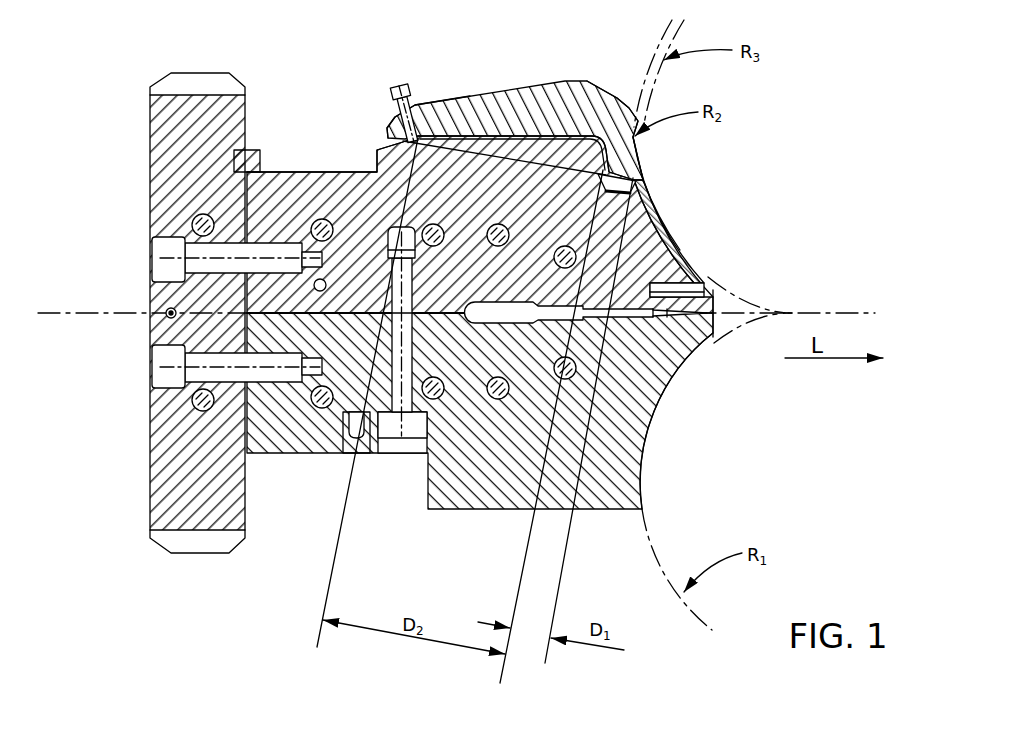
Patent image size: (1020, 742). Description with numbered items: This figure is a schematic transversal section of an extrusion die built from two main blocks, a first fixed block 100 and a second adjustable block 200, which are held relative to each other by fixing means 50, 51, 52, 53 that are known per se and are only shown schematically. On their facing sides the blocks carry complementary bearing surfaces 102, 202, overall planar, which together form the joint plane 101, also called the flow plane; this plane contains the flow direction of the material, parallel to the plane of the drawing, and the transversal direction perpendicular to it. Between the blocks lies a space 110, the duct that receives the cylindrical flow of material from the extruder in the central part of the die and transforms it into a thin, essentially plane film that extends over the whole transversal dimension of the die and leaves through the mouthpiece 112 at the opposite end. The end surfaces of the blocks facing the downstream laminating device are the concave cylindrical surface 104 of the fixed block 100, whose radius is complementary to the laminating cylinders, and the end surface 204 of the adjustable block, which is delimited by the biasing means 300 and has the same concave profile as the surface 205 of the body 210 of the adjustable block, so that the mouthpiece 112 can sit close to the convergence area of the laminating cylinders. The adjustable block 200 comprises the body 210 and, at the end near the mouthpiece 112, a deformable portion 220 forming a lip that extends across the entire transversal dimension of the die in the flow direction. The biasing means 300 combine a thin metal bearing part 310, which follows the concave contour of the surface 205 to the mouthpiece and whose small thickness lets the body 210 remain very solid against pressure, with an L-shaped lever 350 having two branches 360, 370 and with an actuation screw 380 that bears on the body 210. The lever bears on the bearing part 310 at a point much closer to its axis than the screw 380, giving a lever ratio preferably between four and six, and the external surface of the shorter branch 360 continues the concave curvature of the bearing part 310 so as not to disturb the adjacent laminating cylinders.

The fixing means 50 is at (172, 150).
The fixing means 51 is at (165, 252).
The fixing means 52 is at (165, 375).
The fixing means 53 is at (399, 441).
The fixed block 100 is at (482, 512).
The joint plane 101 is at (90, 315).
The bearing surface 102 is at (283, 305).
The end surface 104 is at (647, 483).
The space 110 is at (668, 316).
The mouthpiece 112 is at (722, 335).
The adjustable block 200 is at (497, 162).
The bearing surface 202 is at (268, 318).
The end surface 204 is at (658, 195).
The concave surface 205 is at (665, 227).
The body 210 is at (323, 192).
The deformable portion 220 is at (700, 278).
The biasing means 300 is at (748, 125).
The bearing part 310 is at (678, 255).
The lever 350 is at (572, 105).
The shorter branch 360 is at (618, 120).
The branch 370 is at (435, 117).
The actuation screw 380 is at (395, 88).